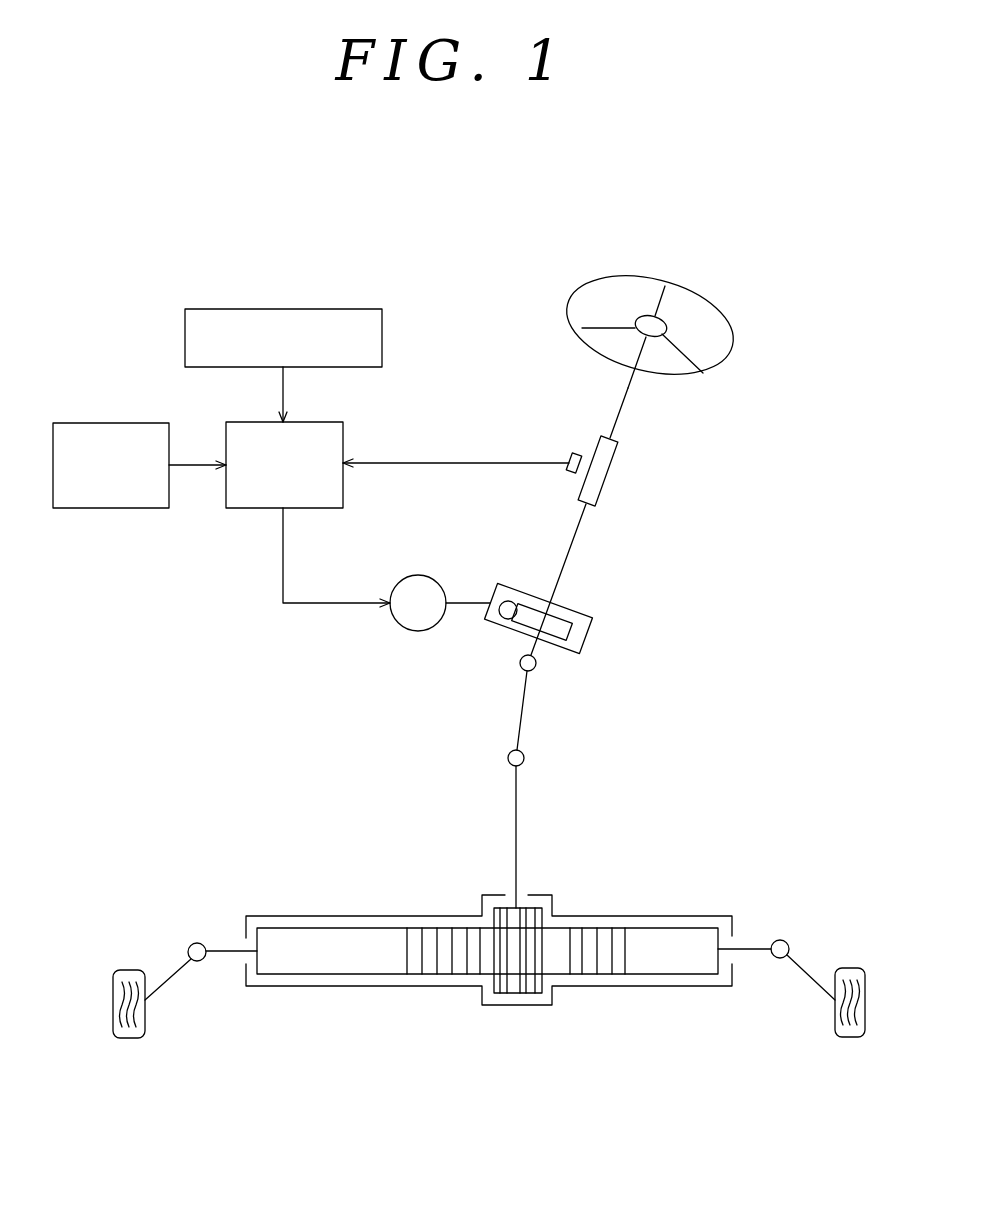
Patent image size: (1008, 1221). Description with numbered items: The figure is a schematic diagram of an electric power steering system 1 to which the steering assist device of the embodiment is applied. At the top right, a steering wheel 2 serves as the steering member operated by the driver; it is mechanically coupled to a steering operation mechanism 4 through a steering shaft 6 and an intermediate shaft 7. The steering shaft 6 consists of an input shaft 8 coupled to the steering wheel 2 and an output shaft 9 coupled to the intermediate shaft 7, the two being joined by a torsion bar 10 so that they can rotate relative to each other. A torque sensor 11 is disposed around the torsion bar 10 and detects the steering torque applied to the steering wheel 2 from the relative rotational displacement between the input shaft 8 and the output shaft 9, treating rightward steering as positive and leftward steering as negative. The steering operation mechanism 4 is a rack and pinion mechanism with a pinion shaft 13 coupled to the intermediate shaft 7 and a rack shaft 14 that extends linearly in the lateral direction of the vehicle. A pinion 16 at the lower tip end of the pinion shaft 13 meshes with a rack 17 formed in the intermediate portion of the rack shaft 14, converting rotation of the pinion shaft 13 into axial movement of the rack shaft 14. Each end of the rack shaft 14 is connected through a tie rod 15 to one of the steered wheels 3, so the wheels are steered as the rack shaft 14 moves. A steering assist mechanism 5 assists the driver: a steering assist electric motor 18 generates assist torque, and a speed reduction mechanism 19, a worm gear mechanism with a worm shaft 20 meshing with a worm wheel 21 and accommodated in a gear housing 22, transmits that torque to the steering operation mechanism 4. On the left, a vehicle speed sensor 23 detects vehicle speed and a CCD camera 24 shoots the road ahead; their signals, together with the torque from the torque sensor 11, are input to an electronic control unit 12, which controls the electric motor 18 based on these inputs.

The electric power steering system 1 is at (210, 265).
The steering wheel 2 is at (652, 279).
The steered wheels 3 is at (130, 970).
The steering operation mechanism 4 is at (575, 925).
The steering assist mechanism 5 is at (537, 525).
The steering shaft 6 is at (630, 388).
The intermediate shaft 7 is at (522, 727).
The input shaft 8 is at (617, 423).
The output shaft 9 is at (578, 533).
The torsion bar 10 is at (602, 477).
The torque sensor 11 is at (570, 455).
The electronic control unit 12 is at (343, 437).
The pinion shaft 13 is at (516, 830).
The rack shaft 14 is at (670, 973).
The tie rod 15 is at (173, 978).
The pinion 16 is at (517, 985).
The rack 17 is at (430, 967).
The steering assist electric motor 18 is at (420, 576).
The speed reduction mechanism 19 is at (515, 590).
The worm shaft 20 is at (497, 630).
The worm wheel 21 is at (565, 630).
The gear housing 22 is at (562, 654).
The vehicle speed sensor 23 is at (310, 308).
The CCD camera 24 is at (112, 422).